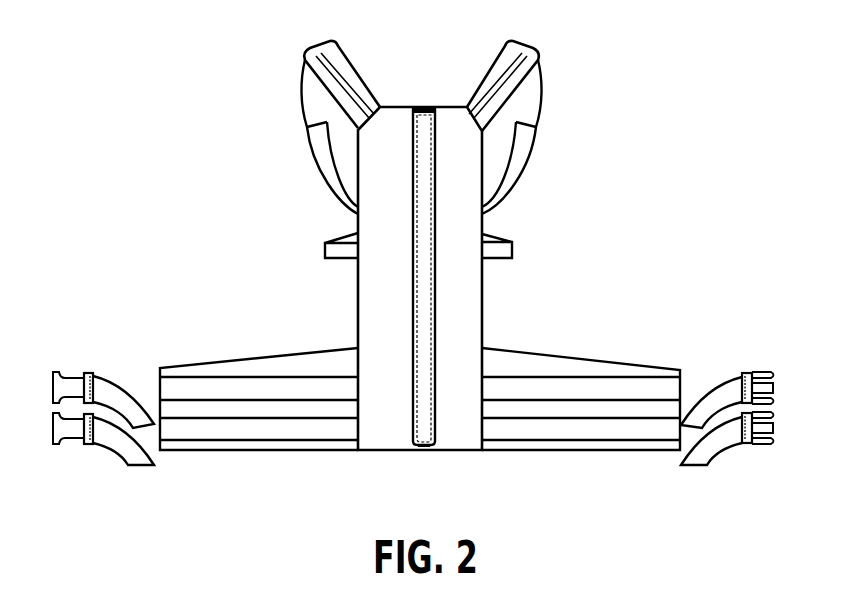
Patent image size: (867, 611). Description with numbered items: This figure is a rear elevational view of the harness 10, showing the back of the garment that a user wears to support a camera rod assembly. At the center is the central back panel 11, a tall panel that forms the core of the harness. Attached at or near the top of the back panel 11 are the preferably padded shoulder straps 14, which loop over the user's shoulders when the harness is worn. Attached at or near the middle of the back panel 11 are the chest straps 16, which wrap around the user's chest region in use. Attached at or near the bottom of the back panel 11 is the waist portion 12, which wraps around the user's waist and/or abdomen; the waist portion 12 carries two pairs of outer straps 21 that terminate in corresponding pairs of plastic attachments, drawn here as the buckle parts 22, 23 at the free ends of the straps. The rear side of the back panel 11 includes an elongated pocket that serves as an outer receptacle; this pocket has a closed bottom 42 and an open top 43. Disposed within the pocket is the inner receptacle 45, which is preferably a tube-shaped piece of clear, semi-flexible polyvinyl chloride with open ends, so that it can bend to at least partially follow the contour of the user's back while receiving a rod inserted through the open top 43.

The harness 10 is at (740, 103).
The central back panel 11 is at (356, 308).
The waist portion 12 is at (307, 433).
The shoulder straps 14 is at (322, 52).
The chest straps 16 is at (333, 252).
The outer straps 21 is at (132, 388).
The buckle tab 22 is at (53, 386).
The buckle 23 is at (85, 373).
The closed bottom 42 is at (427, 447).
The open top 43 is at (423, 106).
The inner receptacle 45 is at (415, 237).